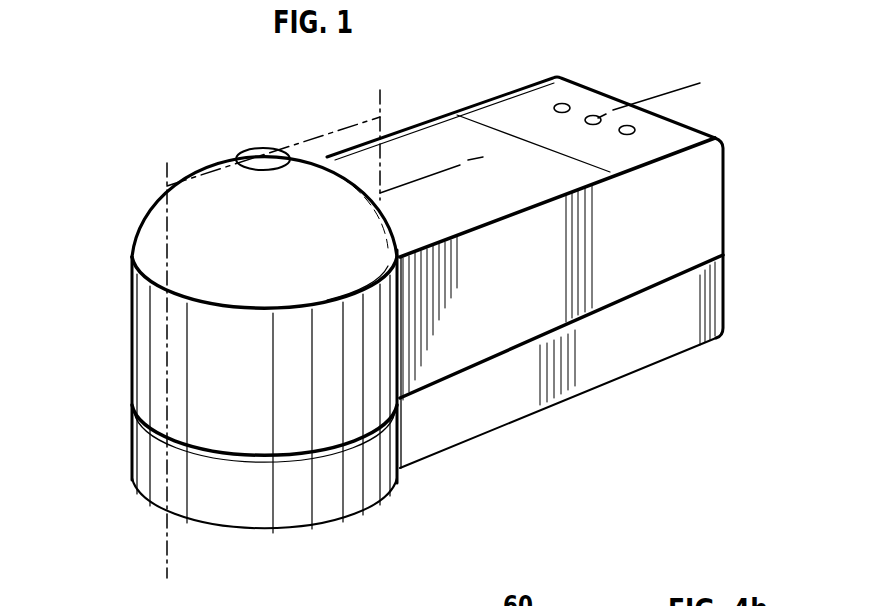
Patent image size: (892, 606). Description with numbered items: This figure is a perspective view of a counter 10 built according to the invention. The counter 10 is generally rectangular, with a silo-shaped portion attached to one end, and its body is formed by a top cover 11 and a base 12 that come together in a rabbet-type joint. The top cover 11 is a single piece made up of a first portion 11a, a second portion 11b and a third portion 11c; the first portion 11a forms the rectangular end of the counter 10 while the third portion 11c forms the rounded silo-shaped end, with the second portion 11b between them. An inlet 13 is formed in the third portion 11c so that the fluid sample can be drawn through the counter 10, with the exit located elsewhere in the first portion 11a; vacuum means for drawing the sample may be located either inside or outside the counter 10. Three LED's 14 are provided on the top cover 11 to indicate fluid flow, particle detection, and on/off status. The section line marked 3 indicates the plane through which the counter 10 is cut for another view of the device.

The counter 10 is at (505, 447).
The top cover 11 is at (132, 303).
The first portion 11a is at (717, 213).
The second portion 11b is at (135, 348).
The third portion 11c is at (137, 222).
The base 12 is at (133, 456).
The inlet 13 is at (258, 157).
The LED's 14 is at (567, 104).
The section line 3- 3 is at (700, 83).